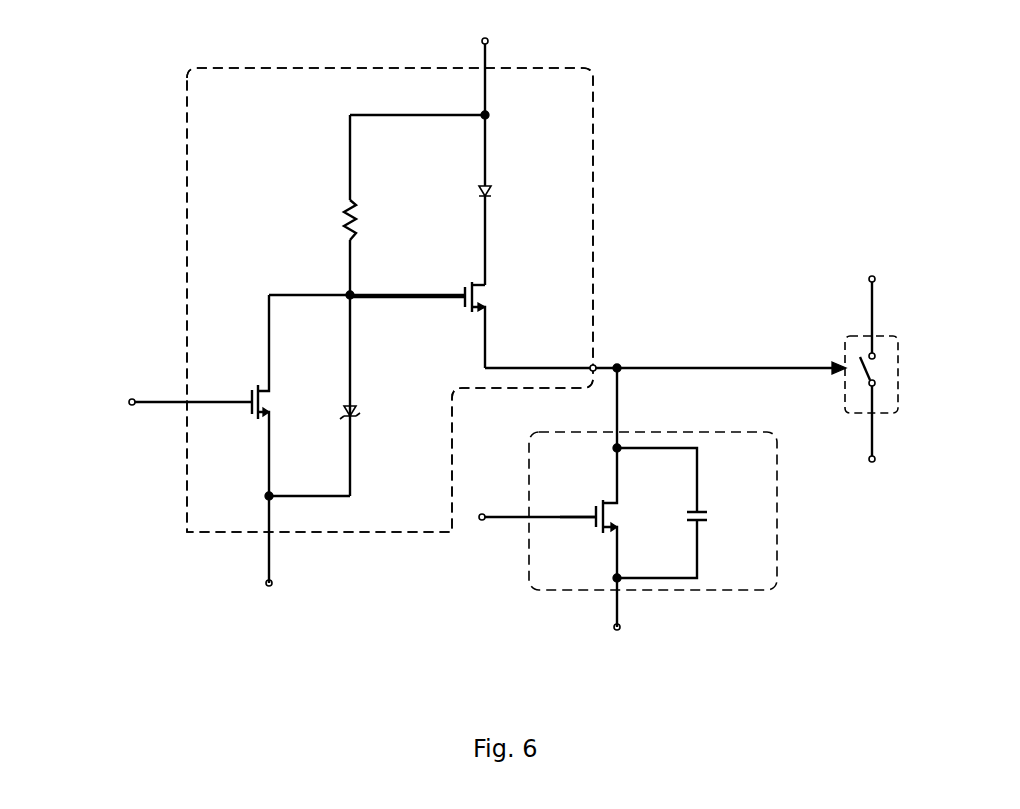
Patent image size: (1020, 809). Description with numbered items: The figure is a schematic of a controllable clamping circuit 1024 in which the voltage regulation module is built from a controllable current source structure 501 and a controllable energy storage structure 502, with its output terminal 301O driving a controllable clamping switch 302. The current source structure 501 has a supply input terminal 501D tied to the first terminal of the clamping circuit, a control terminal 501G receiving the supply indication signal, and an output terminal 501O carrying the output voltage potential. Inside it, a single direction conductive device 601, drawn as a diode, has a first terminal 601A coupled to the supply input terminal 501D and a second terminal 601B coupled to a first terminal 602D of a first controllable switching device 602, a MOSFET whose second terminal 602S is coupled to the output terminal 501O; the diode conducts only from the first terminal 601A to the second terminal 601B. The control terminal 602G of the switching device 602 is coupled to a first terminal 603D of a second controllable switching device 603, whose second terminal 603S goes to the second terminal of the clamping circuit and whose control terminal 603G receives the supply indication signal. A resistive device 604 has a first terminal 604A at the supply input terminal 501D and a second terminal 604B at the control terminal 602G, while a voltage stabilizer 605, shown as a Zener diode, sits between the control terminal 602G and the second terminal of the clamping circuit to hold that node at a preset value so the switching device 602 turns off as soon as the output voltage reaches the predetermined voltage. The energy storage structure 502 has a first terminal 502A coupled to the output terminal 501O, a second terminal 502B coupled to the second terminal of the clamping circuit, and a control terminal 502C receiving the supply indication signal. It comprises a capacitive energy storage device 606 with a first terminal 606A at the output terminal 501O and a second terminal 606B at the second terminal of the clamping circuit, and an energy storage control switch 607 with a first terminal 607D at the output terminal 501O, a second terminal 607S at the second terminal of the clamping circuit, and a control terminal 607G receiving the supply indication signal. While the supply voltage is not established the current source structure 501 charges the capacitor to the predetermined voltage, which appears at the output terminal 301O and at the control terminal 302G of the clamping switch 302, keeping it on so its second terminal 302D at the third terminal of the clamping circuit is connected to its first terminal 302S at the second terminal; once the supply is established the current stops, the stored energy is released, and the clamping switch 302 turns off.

The controllable clamping circuit 1024 is at (125, 31).
The controllable current source structure 501 is at (343, 62).
The supply input terminal 501D is at (499, 68).
The control terminal 501G is at (135, 400).
The output terminal 501O is at (551, 361).
The controllable energy storage structure 502 is at (728, 432).
The first terminal 502A is at (636, 410).
The second terminal 502B is at (632, 609).
The control terminal 502C is at (525, 520).
The single direction conductive device 601 is at (496, 193).
The first terminal 601A is at (487, 166).
The second terminal 601B is at (487, 217).
The first controllable switching device 602 is at (447, 310).
The first terminal 602D is at (486, 276).
The control terminal 602G is at (440, 301).
The second terminal 602S is at (487, 322).
The second controllable switching device 603 is at (300, 452).
The first terminal 603D is at (268, 381).
The control terminal 603G is at (246, 405).
The second terminal 603S is at (268, 430).
The resistive device 604 is at (358, 220).
The first terminal 604A is at (350, 186).
The second terminal 604B is at (350, 255).
The voltage stabilizer 605 is at (358, 413).
The capacitive energy storage device 606 is at (692, 513).
The first terminal 606A is at (698, 493).
The second terminal 606B is at (698, 540).
The energy storage control switch 607 is at (602, 513).
The first terminal 607D is at (616, 500).
The control terminal 607G is at (594, 520).
The second terminal 607S is at (616, 545).
The output terminal 301O is at (729, 360).
The controllable clamping switch 302 is at (881, 369).
The second terminal 302D is at (872, 350).
The control terminal 302G is at (845, 378).
The first terminal 302S is at (876, 385).